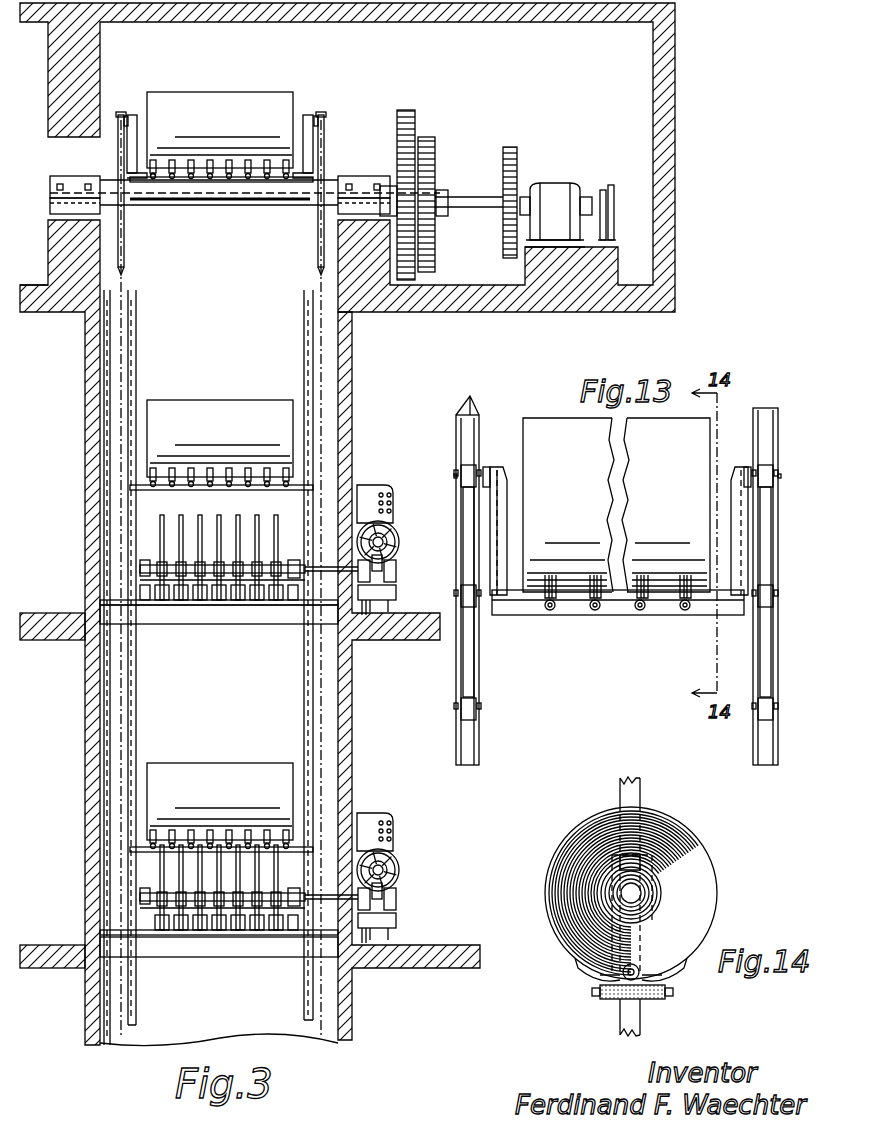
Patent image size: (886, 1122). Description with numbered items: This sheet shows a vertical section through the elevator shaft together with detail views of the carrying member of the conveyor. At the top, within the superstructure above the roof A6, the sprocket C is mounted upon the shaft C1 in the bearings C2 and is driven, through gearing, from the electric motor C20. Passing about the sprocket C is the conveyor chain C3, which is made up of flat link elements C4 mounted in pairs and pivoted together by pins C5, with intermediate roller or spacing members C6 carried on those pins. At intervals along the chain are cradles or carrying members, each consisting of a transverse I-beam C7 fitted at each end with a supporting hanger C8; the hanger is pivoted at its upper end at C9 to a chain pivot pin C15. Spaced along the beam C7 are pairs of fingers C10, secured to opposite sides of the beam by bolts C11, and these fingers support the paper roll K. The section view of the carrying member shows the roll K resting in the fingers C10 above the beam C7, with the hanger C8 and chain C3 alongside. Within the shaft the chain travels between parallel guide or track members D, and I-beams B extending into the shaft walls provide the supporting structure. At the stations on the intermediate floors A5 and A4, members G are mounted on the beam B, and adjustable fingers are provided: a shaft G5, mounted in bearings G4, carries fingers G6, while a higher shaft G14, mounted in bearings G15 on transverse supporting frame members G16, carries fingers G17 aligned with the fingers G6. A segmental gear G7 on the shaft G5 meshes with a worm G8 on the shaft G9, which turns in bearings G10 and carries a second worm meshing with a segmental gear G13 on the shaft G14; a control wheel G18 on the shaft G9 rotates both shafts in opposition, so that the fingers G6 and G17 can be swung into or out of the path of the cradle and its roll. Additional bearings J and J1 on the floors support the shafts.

In FIG. 3, the intermediate floor A4 is at (470, 945).
In FIG. 3, the intermediate floor A5 is at (33, 625).
In FIG. 3, the roof A6 is at (22, 287).
In FIG. 3, the I-beam B is at (237, 957).
In FIG. 3, the sprocket C is at (326, 118).
In FIG. 3, the shaft C1 is at (232, 205).
In FIG. 3, the bearings C2 is at (358, 178).
In FIG. 3, the conveyor chain C3 is at (368, 352).
In FIG. 13, the conveyor chain C3 is at (757, 760).
In FIG. 14, the conveyor chain C3 is at (622, 1020).
In FIG. 13, the flat link elements C4 is at (460, 765).
In FIG. 14, the flat link elements C4 is at (621, 790).
In FIG. 13, the pin C5 is at (780, 588).
In FIG. 13, the roller or spacing members C6 is at (765, 590).
In FIG. 3, the transverse I-beam C7 is at (140, 843).
In FIG. 13, the transverse I-beam C7 is at (665, 612).
In FIG. 14, the transverse I-beam C7 is at (640, 1000).
In FIG. 3, the supporting hanger C8 is at (313, 142).
In FIG. 13, the supporting hanger C8 is at (735, 518).
In FIG. 14, the supporting hanger C8 is at (652, 920).
In FIG. 3, the pivot C9 is at (317, 116).
In FIG. 13, the pivot C9 is at (750, 467).
In FIG. 3, the fingers C10 is at (212, 833).
In FIG. 13, the fingers C10 is at (685, 575).
In FIG. 14, the fingers C10 is at (682, 978).
In FIG. 3, the bolts C11 is at (153, 180).
In FIG. 13, the bolts C11 is at (630, 612).
In FIG. 14, the bolts C11 is at (665, 995).
In FIG. 13, the chain pivot pin C15 is at (780, 473).
In FIG. 14, the chain pivot pin C15 is at (652, 858).
In FIG. 3, the electric motor C20 is at (558, 190).
In FIG. 3, the guide or track members D is at (304, 330).
In FIG. 3, the members G is at (262, 937).
In FIG. 3, the bearings G4 is at (284, 935).
In FIG. 3, the shaft G5 is at (140, 923).
In FIG. 3, the fingers G6 is at (188, 935).
In FIG. 3, the segmental gear G7 is at (383, 945).
In FIG. 3, the worm G8 is at (398, 872).
In FIG. 3, the shaft G9 is at (396, 892).
In FIG. 3, the bearings G10 is at (385, 850).
In FIG. 3, the segmental gear G13 is at (396, 900).
In FIG. 3, the shaft G14 is at (140, 905).
In FIG. 3, the bearings G15 is at (291, 890).
In FIG. 3, the transverse supporting frame members G16 is at (140, 590).
In FIG. 3, the fingers G17 is at (162, 852).
In FIG. 3, the control wheel G18 is at (396, 865).
In FIG. 3, the bearing J is at (364, 945).
In FIG. 3, the bearing J1 is at (357, 567).
In FIG. 3, the paper roll K is at (236, 763).
In FIG. 13, the paper roll K is at (541, 420).
In FIG. 14, the paper roll K is at (693, 836).